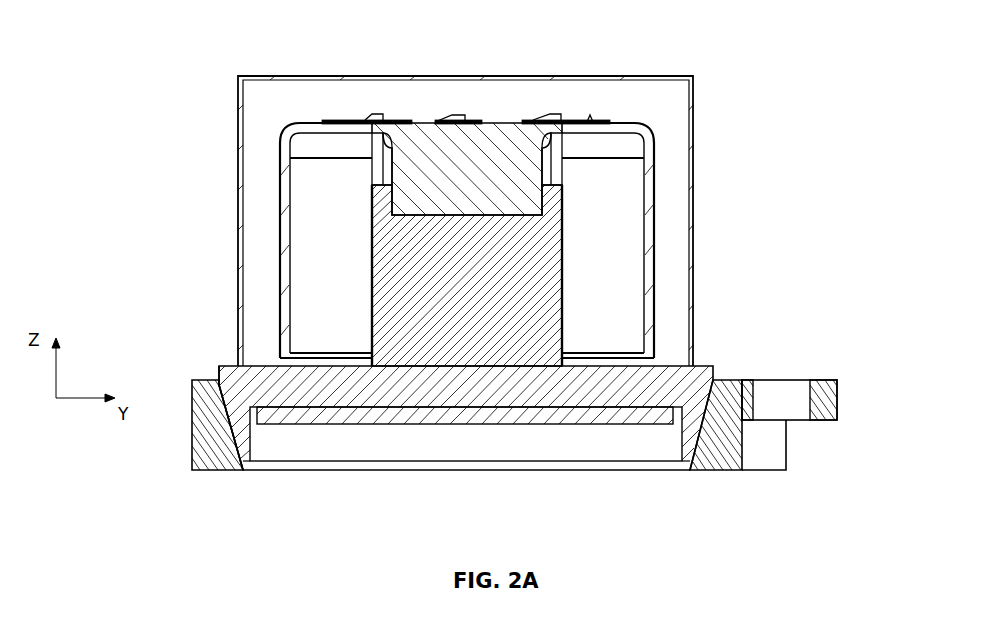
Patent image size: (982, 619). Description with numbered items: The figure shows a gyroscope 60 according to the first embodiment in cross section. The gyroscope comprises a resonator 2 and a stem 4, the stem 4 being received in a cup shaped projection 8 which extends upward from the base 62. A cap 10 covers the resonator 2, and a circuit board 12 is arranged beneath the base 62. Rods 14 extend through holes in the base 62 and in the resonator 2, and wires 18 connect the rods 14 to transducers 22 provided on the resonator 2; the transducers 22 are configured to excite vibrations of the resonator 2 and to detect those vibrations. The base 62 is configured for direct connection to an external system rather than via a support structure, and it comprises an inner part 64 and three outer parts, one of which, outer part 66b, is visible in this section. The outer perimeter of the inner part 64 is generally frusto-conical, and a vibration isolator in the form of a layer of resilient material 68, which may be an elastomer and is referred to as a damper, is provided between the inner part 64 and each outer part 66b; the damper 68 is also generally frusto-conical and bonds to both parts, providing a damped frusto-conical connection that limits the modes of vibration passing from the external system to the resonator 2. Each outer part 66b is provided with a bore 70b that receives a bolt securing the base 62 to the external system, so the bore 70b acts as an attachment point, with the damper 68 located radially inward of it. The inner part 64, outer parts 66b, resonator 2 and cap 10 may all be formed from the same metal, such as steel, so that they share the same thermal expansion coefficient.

The gyroscope 60 is at (186, 44).
The cap 10 is at (688, 75).
The resonator 2 is at (283, 273).
The stem 4 is at (507, 124).
The cup shaped projection 8 is at (510, 285).
The circuit board 12 is at (485, 410).
The rods 14 is at (376, 168).
The wires 18 is at (367, 118).
The transducers 22 is at (392, 121).
The base 62 is at (383, 378).
The inner part 64 is at (217, 370).
The outer part 66b is at (825, 380).
The layer of resilient material 68 is at (217, 467).
The bore 70b is at (792, 408).